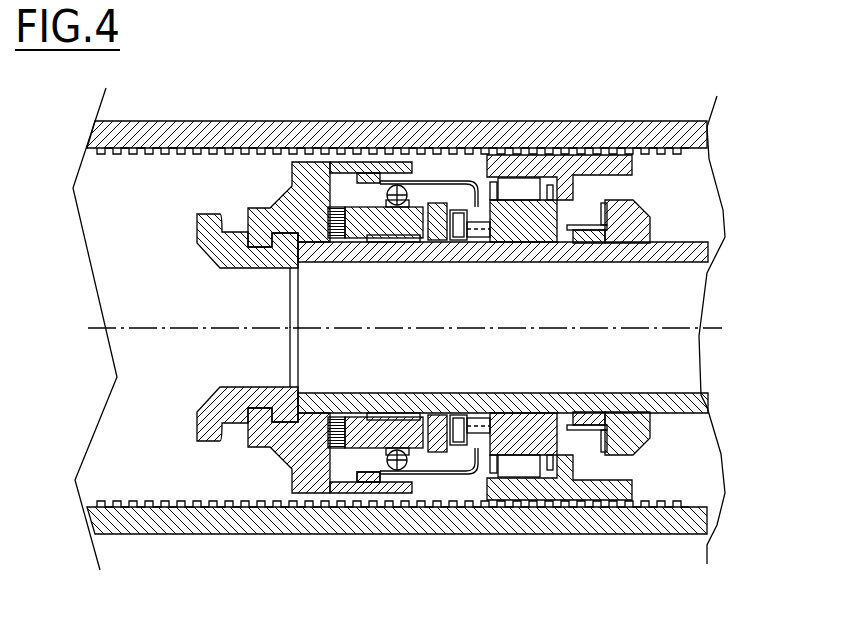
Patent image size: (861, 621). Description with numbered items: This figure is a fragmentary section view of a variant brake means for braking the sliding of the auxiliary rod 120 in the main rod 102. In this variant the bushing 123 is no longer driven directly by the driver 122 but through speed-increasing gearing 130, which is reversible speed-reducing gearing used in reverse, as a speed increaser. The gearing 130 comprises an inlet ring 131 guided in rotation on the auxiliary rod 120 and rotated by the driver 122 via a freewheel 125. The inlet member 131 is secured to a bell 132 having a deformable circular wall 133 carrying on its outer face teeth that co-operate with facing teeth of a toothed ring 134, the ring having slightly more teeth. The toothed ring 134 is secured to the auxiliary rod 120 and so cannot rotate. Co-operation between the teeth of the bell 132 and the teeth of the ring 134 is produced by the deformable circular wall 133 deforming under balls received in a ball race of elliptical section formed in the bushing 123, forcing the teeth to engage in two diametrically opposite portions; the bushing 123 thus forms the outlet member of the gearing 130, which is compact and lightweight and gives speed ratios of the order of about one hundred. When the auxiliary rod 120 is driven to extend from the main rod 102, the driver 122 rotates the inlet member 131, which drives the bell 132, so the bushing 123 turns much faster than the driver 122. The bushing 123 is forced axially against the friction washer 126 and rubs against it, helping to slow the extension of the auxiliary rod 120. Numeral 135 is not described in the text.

The main rod 102 is at (184, 138).
The auxiliary rod 120 is at (684, 254).
The driver 122 is at (520, 170).
The bushing 123 is at (327, 457).
The freewheel 125 is at (528, 198).
The friction washer 126 is at (310, 163).
The speed-increasing gearing 130 is at (451, 179).
The inlet ring 131 is at (534, 248).
The bell 132 is at (457, 473).
The deformable circular wall 133 is at (392, 183).
The toothed ring 134 is at (397, 470).
The follower ring 135 is at (380, 463).